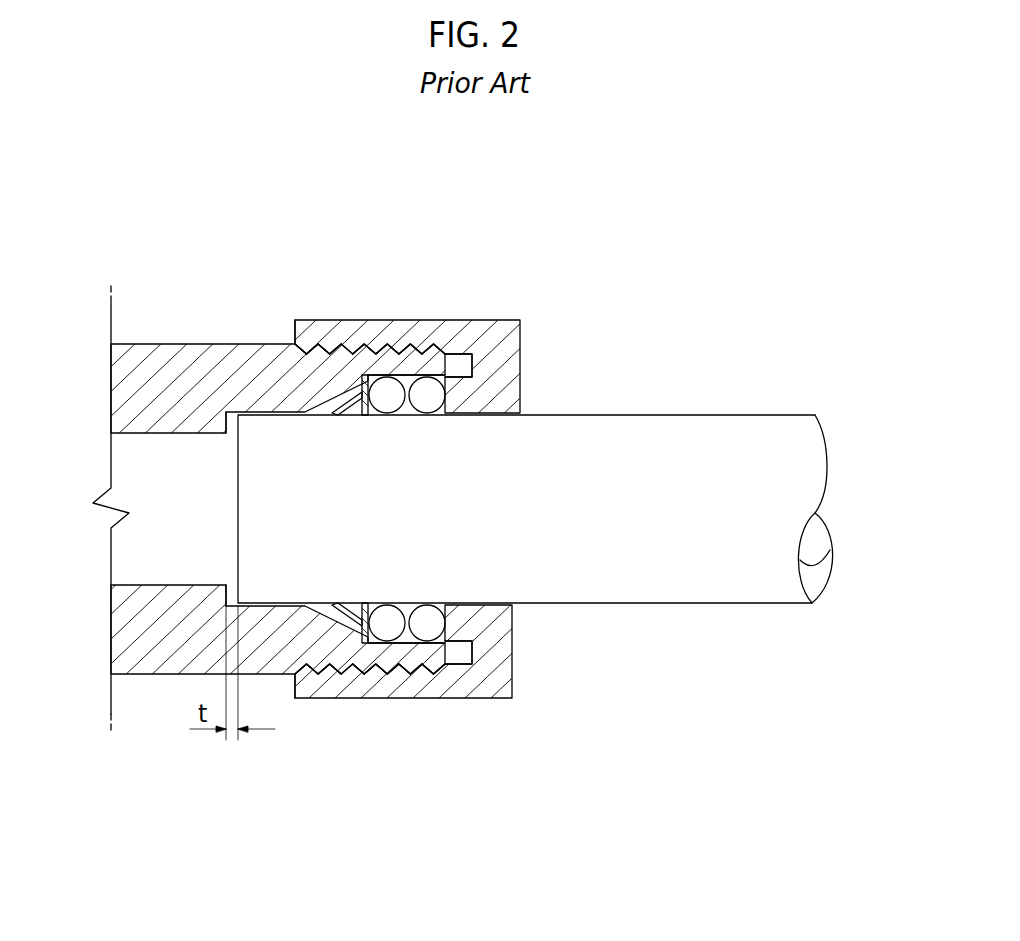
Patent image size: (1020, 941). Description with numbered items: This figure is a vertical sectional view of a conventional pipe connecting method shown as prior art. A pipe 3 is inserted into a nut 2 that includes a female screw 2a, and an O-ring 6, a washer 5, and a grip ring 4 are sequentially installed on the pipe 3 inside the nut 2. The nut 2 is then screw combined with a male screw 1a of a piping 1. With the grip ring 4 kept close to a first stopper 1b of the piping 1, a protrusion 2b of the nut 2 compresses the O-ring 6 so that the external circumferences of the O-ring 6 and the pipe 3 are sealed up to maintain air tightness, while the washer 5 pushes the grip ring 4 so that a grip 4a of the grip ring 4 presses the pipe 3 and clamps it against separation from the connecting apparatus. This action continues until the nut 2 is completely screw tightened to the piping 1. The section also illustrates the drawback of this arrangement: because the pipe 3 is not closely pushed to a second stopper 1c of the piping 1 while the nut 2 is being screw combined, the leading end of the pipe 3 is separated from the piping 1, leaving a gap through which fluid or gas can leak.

The piping 1 is at (140, 362).
The male screw 1a is at (302, 677).
The first stopper 1b is at (383, 655).
The second stopper 1c is at (232, 405).
The nut 2 is at (513, 660).
The female screw 2a is at (296, 353).
The protrusion 2b is at (460, 365).
The pipe 3 is at (625, 435).
The grip ring 4 is at (362, 374).
The grip 4a is at (345, 640).
The washer 5 is at (374, 352).
The O-ring 6 is at (405, 645).